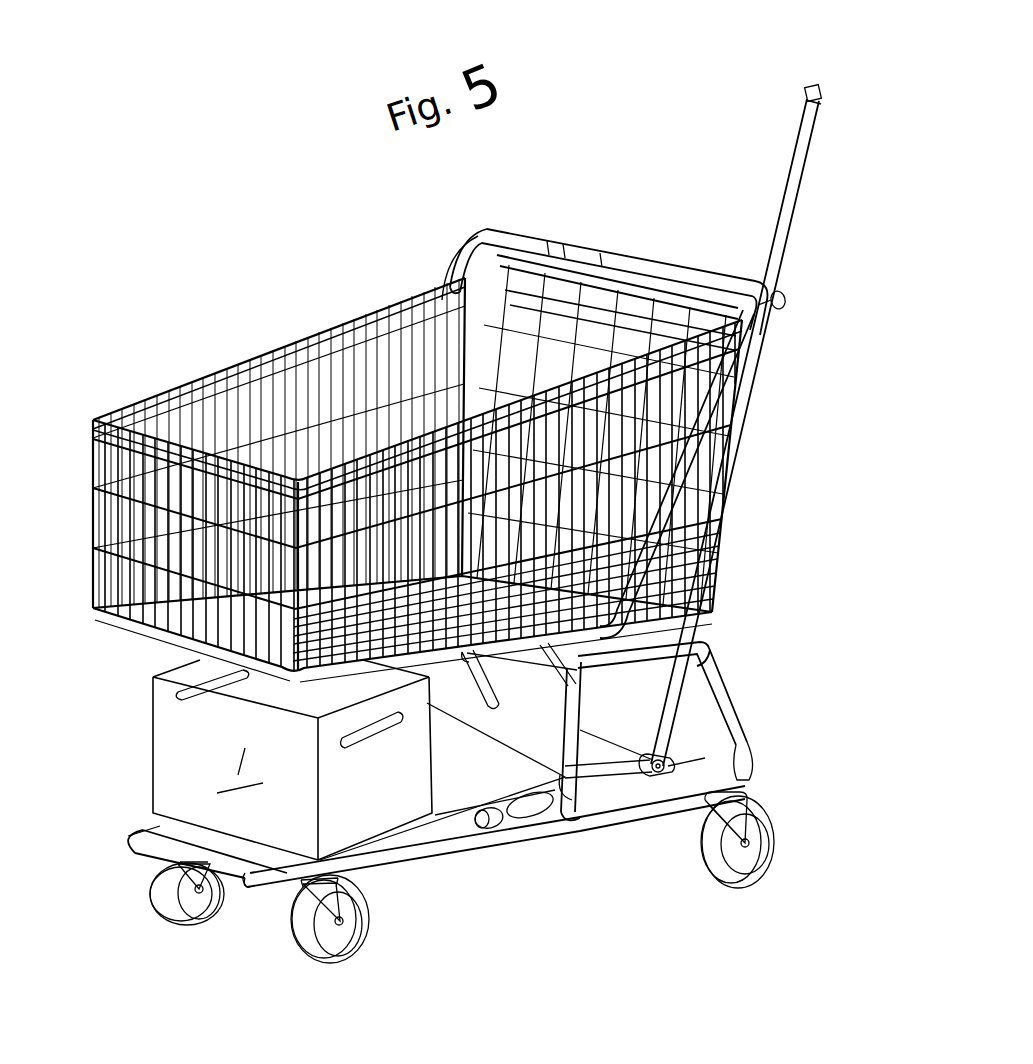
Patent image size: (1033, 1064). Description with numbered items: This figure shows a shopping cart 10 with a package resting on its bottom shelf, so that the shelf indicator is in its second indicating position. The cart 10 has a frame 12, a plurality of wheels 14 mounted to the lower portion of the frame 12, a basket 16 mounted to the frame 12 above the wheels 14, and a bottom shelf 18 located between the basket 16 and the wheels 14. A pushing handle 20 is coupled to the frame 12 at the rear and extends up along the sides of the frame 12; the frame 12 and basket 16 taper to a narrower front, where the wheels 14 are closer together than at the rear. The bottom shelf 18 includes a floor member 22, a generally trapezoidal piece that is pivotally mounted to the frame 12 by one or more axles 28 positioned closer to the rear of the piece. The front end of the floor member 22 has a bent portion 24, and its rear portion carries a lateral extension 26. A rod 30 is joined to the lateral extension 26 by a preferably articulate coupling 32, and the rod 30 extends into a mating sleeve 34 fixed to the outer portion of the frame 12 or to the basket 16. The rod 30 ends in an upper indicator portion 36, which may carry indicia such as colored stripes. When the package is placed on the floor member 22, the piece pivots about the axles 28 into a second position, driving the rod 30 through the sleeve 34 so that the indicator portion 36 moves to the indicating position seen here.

The shopping cart 10 is at (630, 192).
The frame 12 is at (716, 678).
The wheels 14 is at (185, 927).
The basket 16 is at (260, 353).
The bottom shelf 18 is at (122, 814).
The pushing handle 20 is at (452, 248).
The floor member 22 is at (507, 773).
The bent portion 24 is at (141, 862).
The lateral extension 26 is at (613, 797).
The axle 28 is at (460, 828).
The rod 30 is at (824, 97).
The coupling 32 is at (647, 762).
The mating sleeve 34 is at (724, 493).
The upper indicator portion 36 is at (812, 98).